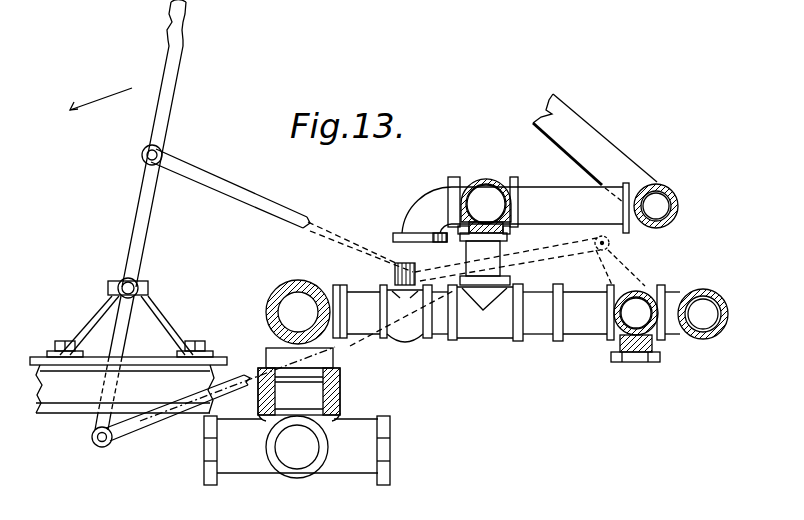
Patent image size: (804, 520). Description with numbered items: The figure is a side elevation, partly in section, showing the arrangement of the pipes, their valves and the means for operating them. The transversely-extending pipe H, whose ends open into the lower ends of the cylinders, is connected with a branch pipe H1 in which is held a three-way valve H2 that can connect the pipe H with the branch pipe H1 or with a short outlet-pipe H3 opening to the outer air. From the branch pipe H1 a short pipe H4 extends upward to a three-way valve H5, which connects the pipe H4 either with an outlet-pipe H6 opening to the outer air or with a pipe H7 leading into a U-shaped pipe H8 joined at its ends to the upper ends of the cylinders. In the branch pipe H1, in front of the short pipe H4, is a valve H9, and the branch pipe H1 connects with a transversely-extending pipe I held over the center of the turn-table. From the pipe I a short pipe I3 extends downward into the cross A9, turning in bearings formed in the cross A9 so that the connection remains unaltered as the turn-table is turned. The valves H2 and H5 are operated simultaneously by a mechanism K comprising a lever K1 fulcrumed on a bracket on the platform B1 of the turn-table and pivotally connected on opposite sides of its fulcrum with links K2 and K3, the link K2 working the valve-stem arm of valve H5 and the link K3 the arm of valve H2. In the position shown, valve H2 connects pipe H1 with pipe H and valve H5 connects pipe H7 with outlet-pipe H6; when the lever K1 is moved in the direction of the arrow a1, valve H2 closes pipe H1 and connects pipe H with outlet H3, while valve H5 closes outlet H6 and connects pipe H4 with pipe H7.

The arrow a1 is at (101, 92).
The lever K1 is at (133, 220).
The mechanism K is at (252, 190).
The link K2 is at (262, 208).
The link K3 is at (147, 418).
The platform B1 is at (128, 345).
The transversely-extending pipe I is at (298, 300).
The short pipe I3 is at (282, 348).
The cross A9 is at (297, 449).
The transversely-extending pipe H is at (706, 310).
The branch pipe H1 is at (590, 308).
The three-way valve H2 is at (640, 305).
The outlet-pipe H3 is at (637, 357).
The short pipe H4 is at (450, 278).
The three-way valve H5 is at (484, 198).
The outlet-pipe H6 is at (421, 203).
The pipe H7 is at (590, 180).
The U-shaped pipe H8 is at (617, 128).
The valve H9 is at (412, 336).